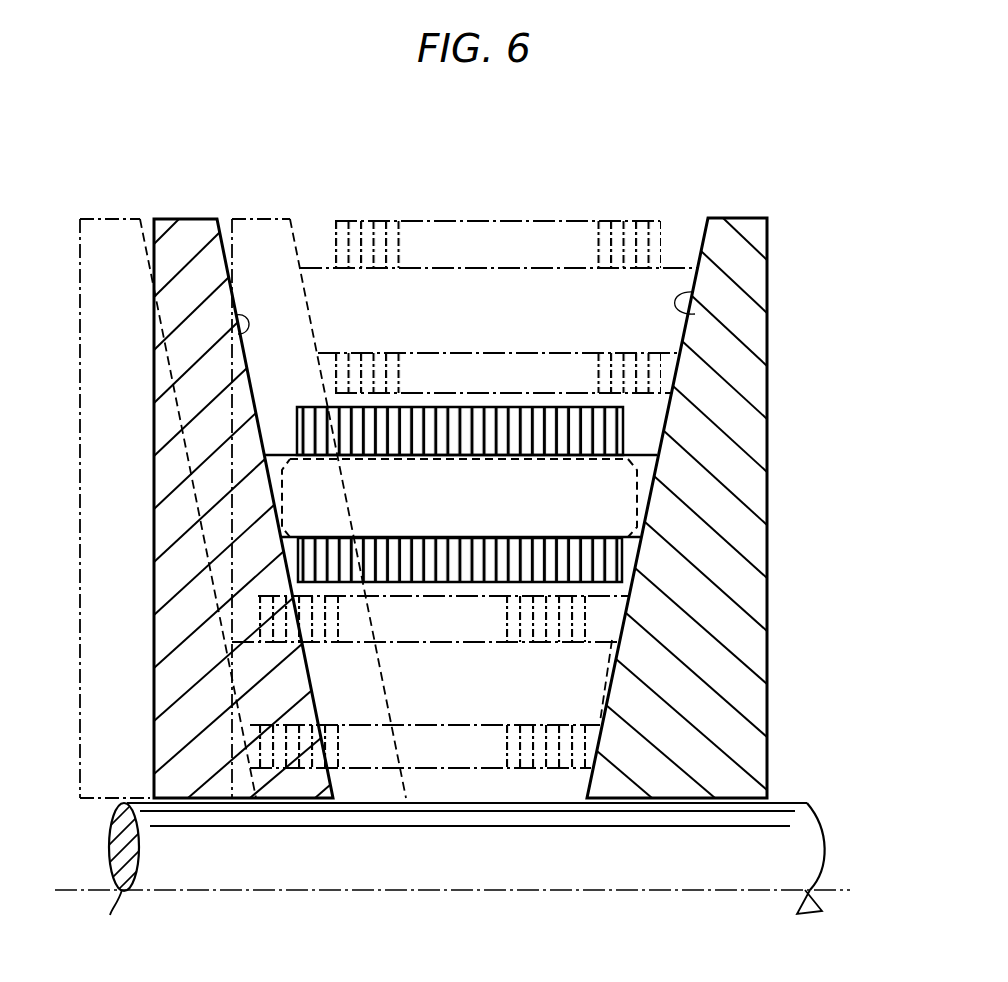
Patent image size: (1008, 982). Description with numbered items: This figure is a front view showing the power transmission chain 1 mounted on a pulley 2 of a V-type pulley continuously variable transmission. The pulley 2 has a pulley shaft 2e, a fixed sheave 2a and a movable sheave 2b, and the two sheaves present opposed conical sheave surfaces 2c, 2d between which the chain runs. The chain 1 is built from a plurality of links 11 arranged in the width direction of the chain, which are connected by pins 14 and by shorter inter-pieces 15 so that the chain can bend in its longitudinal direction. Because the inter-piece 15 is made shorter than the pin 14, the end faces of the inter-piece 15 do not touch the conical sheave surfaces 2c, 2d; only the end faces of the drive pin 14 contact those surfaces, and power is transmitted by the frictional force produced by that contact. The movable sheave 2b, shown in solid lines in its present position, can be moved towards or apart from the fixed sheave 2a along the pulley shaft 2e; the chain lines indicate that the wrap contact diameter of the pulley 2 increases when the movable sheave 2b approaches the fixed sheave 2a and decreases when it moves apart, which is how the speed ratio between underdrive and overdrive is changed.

The power transmission chain 1 is at (535, 221).
The pulley 2 is at (767, 390).
The fixed sheave 2a is at (747, 637).
The movable sheave 2b is at (109, 218).
The conical sheave surface 2c is at (690, 300).
The conical sheave surface 2d is at (236, 323).
The pulley shaft 2e is at (795, 852).
The link 11 is at (330, 405).
The pin 14 is at (640, 467).
The inter-piece 15 is at (633, 514).